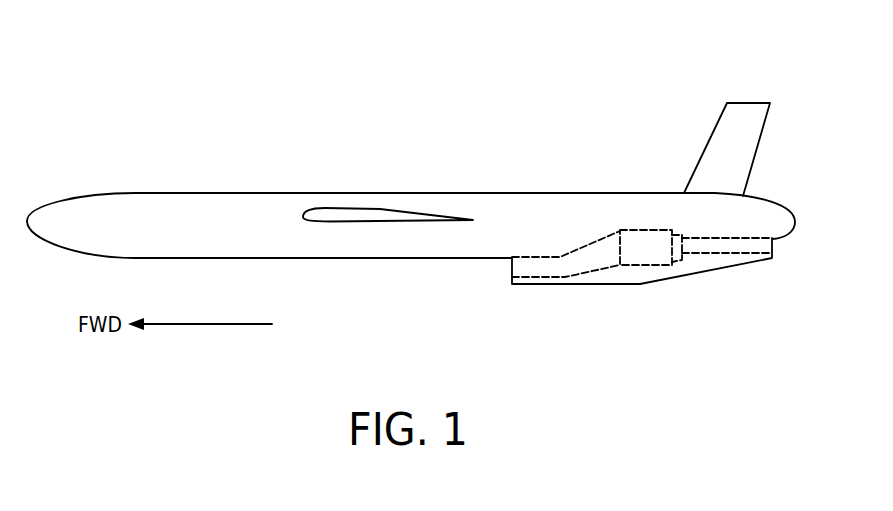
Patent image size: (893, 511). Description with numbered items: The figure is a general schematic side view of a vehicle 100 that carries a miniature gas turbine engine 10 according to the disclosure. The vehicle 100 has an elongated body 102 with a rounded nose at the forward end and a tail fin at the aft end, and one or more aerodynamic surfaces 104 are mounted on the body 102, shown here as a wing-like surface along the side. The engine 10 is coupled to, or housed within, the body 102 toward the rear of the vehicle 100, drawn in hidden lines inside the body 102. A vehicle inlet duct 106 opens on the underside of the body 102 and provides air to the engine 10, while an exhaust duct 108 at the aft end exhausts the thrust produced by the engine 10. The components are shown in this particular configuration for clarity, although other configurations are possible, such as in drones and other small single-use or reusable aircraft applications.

The vehicle 100 is at (440, 112).
The body 102 is at (196, 193).
The aerodynamic surfaces 104 is at (345, 223).
The vehicle inlet duct 106 is at (553, 274).
The miniature gas turbine engine 10 is at (645, 232).
The exhaust duct 108 is at (695, 255).